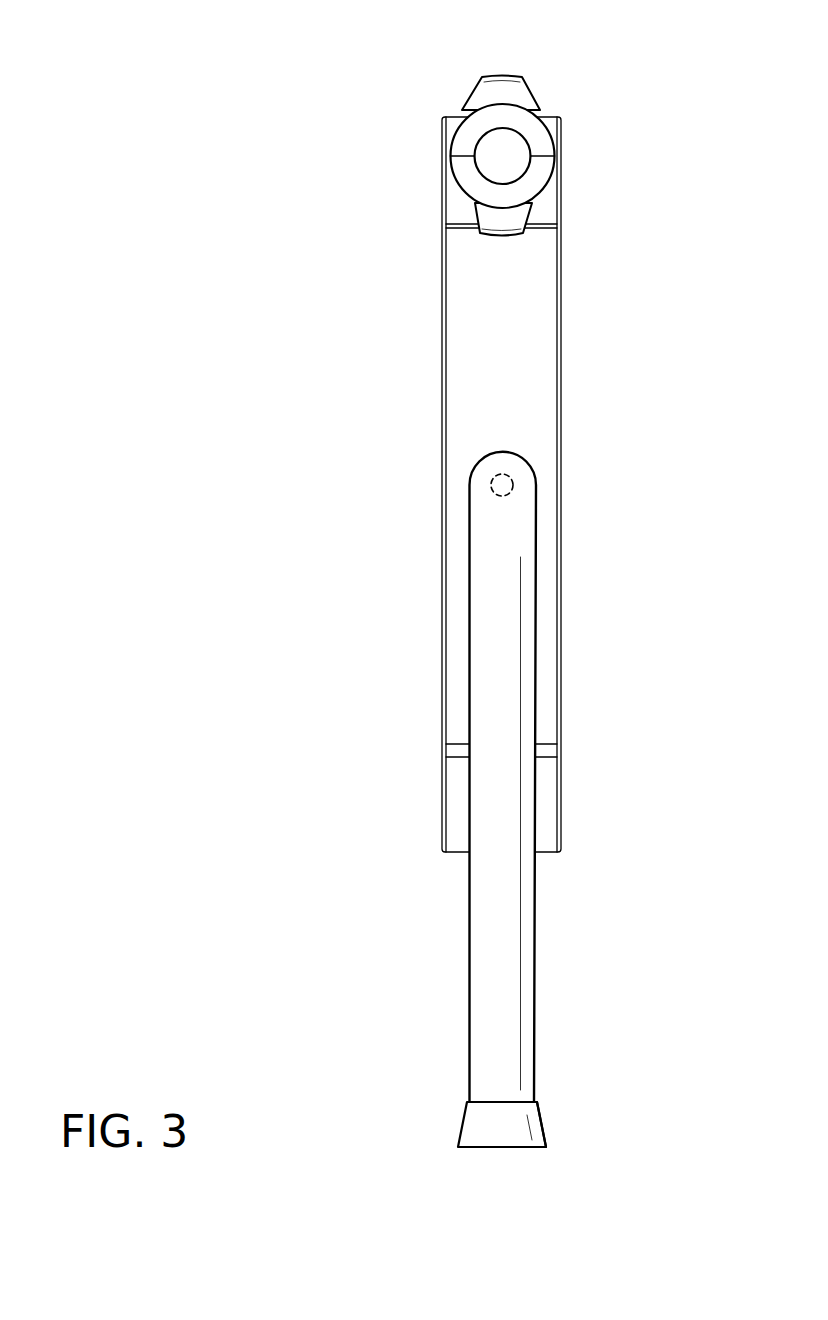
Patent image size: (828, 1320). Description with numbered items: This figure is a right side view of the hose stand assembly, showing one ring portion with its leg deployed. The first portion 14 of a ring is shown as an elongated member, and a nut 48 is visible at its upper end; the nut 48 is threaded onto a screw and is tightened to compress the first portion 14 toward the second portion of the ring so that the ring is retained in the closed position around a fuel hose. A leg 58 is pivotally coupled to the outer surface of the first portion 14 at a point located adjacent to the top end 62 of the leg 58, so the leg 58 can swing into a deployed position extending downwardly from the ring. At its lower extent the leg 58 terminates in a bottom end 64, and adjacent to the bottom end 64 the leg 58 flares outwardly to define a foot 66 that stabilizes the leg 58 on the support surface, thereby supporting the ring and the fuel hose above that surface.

The first portion 14 is at (524, 402).
The nut 48 is at (472, 127).
The leg 58 is at (500, 663).
The top end 62 is at (481, 463).
The bottom end 64 is at (503, 1148).
The foot 66 is at (566, 1125).